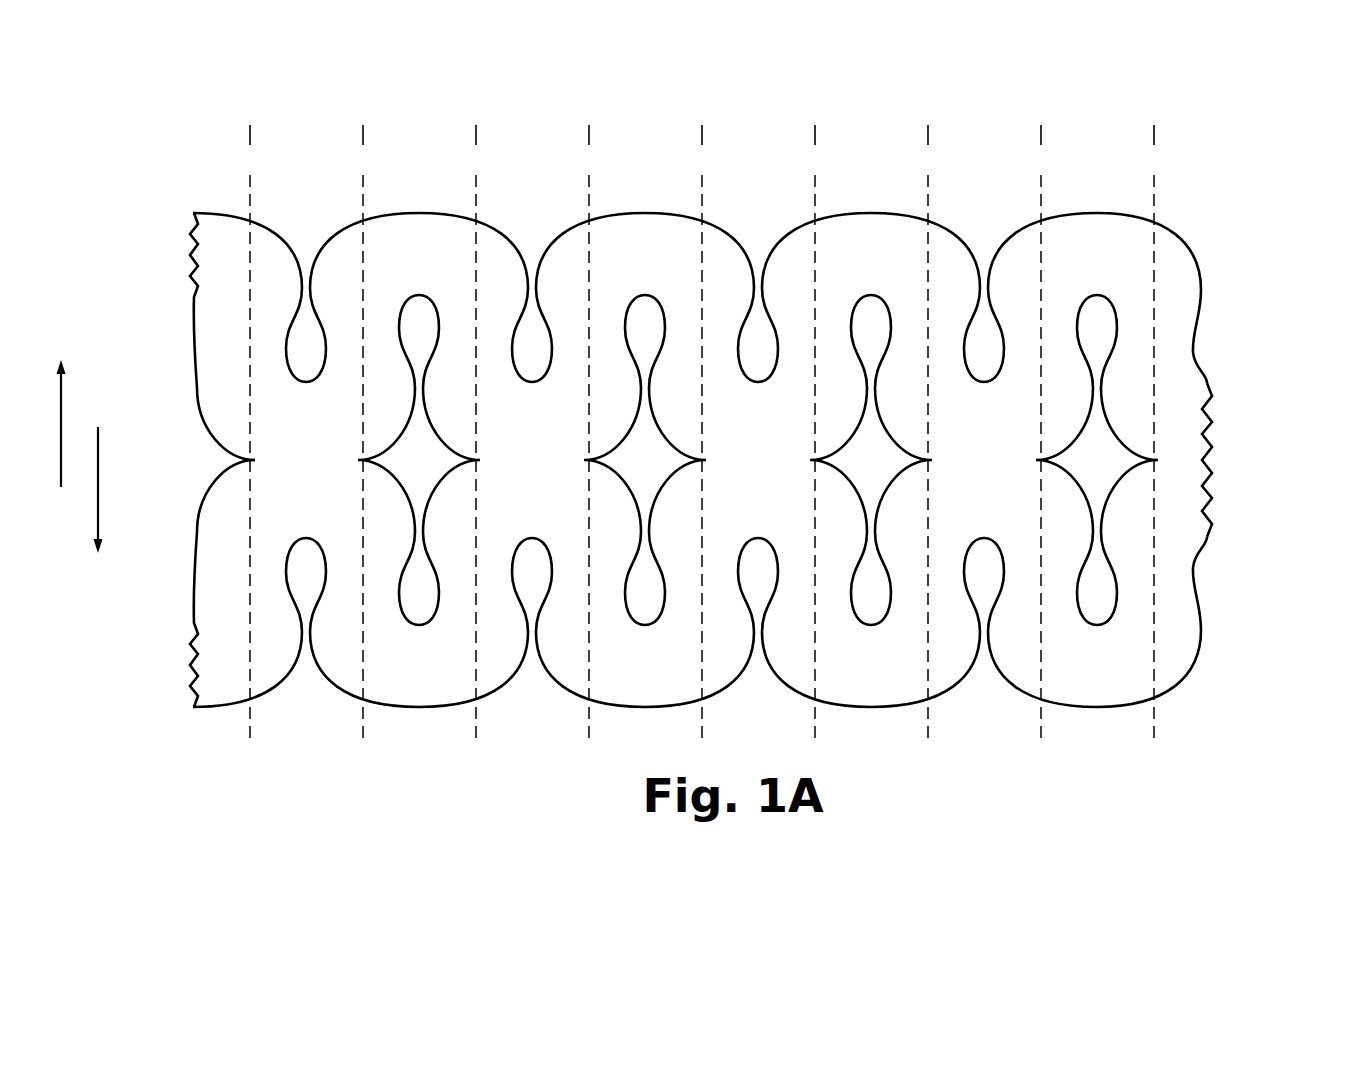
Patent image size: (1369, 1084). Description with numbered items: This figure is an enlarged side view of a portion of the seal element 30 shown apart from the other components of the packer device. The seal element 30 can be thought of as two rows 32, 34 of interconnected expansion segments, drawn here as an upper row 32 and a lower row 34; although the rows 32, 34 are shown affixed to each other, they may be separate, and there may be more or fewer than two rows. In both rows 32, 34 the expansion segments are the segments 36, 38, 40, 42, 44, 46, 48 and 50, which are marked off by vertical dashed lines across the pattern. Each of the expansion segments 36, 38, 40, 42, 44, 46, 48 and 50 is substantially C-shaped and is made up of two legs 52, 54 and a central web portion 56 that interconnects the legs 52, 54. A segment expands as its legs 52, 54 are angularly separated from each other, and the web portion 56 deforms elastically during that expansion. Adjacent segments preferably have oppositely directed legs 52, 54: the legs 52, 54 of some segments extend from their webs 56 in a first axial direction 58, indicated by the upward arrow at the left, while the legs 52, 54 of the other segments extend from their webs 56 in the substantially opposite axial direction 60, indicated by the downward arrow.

The seal element 30 is at (826, 72).
The row 32 is at (1234, 291).
The row 34 is at (1234, 556).
The expansion segment 36 is at (361, 135).
The expansion segment 38 is at (474, 135).
The expansion segment 40 is at (587, 135).
The expansion segment 42 is at (700, 135).
The expansion segment 44 is at (813, 135).
The expansion segment 46 is at (926, 135).
The expansion segment 48 is at (1039, 135).
The expansion segment 50 is at (1152, 135).
The leg 52 is at (259, 301).
The leg 54 is at (319, 301).
The central web portion 56 is at (402, 272).
The first axial direction 58 is at (61, 411).
The opposite axial direction 60 is at (98, 478).